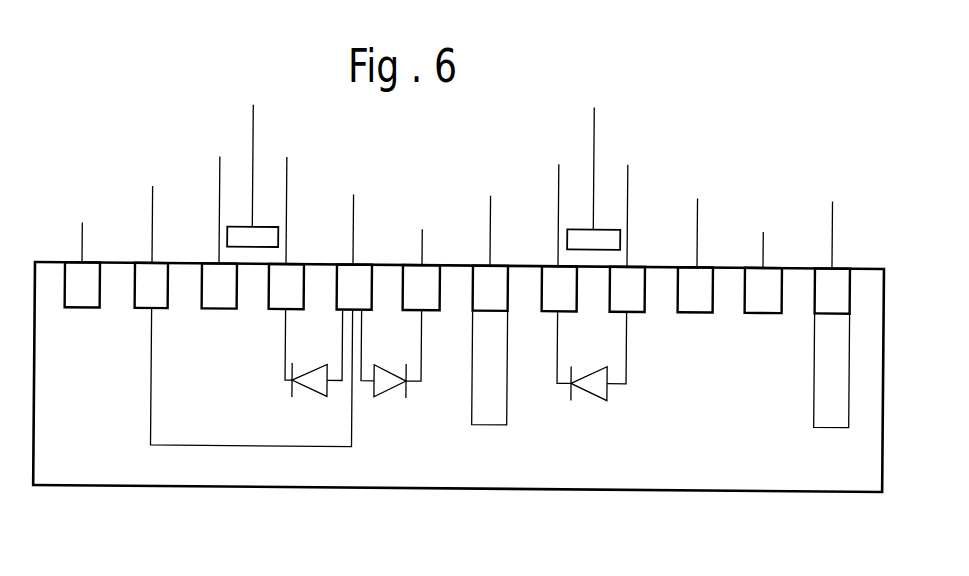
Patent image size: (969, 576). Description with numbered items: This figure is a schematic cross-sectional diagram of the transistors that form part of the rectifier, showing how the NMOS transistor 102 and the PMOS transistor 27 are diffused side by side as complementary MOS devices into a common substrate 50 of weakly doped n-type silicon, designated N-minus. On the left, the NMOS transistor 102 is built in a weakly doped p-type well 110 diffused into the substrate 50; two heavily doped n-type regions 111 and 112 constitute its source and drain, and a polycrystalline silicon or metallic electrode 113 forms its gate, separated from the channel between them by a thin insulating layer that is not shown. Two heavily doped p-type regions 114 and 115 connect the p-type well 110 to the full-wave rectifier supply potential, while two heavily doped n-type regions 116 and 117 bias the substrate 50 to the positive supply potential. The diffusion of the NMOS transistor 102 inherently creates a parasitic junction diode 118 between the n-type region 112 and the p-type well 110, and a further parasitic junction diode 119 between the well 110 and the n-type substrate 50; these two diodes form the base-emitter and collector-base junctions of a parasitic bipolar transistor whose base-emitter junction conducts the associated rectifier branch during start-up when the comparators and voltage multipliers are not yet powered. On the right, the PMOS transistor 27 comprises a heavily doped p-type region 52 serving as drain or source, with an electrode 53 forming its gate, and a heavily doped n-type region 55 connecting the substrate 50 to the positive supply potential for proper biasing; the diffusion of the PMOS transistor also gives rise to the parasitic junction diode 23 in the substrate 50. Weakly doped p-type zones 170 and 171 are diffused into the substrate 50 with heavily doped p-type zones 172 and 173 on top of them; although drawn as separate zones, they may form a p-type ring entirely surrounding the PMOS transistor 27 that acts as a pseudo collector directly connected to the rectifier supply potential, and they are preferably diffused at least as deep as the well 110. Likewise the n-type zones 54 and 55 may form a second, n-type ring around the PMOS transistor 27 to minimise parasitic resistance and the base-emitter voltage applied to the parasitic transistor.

The substrate 50 is at (673, 473).
The NMOS transistor 102 is at (183, 105).
The PMOS transistor 27 is at (640, 118).
The heavily doped n-type region 116 is at (78, 310).
The heavily doped p-type region 114 is at (143, 310).
The heavily doped n-type region 111 is at (212, 310).
The heavily doped n-type region 112 is at (277, 310).
The gate electrode 113 is at (278, 240).
The heavily doped p-type region 115 is at (337, 303).
The heavily doped n-type region 117 is at (410, 310).
The p-type well 110 is at (183, 436).
The parasitic junction diode 118 is at (318, 395).
The parasitic junction diode 119 is at (386, 395).
The heavily doped p-type zone 172 is at (481, 306).
The weakly doped p-type zone 170 is at (500, 421).
The n-type zone 54 is at (547, 310).
The gate electrode 53 is at (620, 238).
The parasitic junction diode 23 is at (600, 395).
The heavily doped p-type region 52 is at (688, 308).
The heavily doped n-type region 55 is at (755, 308).
The heavily doped p-type zone 173 is at (820, 301).
The weakly doped p-type zone 171 is at (820, 425).